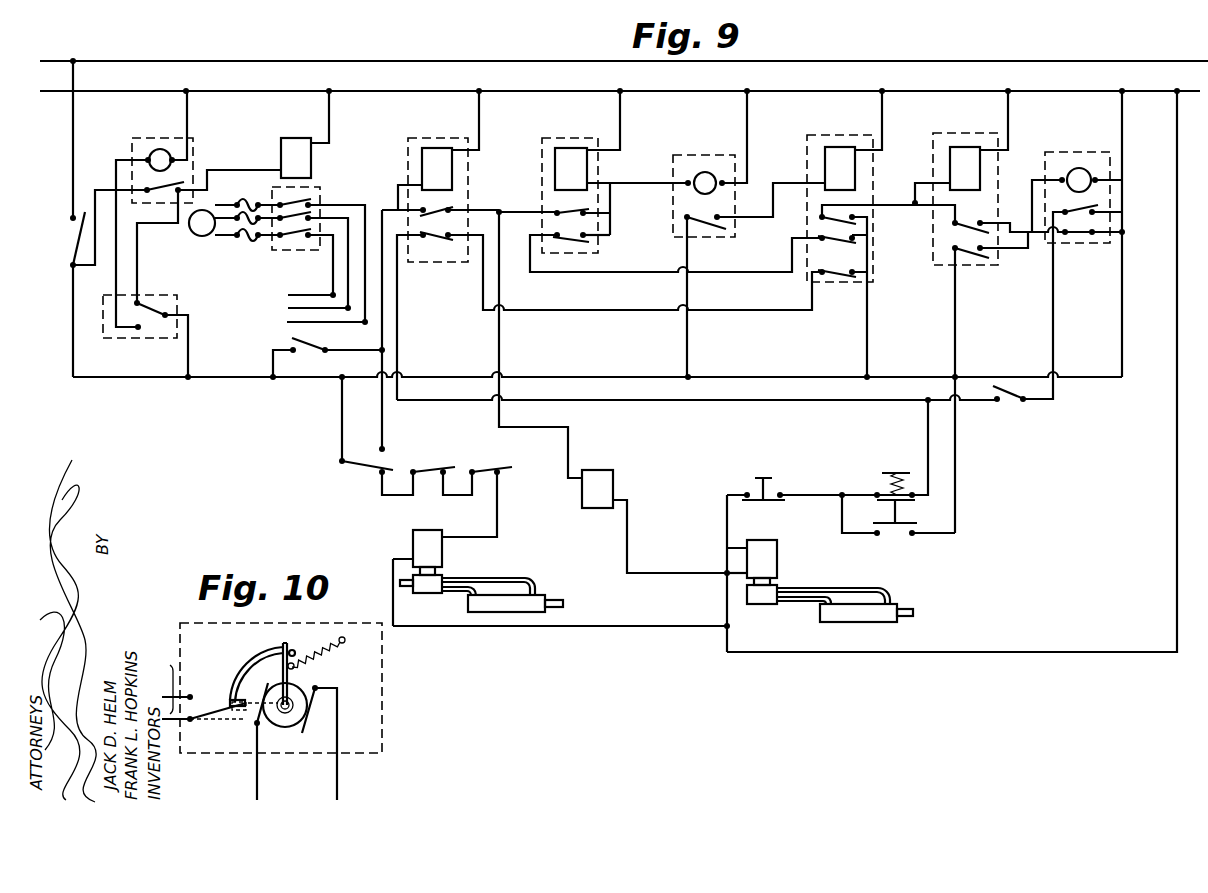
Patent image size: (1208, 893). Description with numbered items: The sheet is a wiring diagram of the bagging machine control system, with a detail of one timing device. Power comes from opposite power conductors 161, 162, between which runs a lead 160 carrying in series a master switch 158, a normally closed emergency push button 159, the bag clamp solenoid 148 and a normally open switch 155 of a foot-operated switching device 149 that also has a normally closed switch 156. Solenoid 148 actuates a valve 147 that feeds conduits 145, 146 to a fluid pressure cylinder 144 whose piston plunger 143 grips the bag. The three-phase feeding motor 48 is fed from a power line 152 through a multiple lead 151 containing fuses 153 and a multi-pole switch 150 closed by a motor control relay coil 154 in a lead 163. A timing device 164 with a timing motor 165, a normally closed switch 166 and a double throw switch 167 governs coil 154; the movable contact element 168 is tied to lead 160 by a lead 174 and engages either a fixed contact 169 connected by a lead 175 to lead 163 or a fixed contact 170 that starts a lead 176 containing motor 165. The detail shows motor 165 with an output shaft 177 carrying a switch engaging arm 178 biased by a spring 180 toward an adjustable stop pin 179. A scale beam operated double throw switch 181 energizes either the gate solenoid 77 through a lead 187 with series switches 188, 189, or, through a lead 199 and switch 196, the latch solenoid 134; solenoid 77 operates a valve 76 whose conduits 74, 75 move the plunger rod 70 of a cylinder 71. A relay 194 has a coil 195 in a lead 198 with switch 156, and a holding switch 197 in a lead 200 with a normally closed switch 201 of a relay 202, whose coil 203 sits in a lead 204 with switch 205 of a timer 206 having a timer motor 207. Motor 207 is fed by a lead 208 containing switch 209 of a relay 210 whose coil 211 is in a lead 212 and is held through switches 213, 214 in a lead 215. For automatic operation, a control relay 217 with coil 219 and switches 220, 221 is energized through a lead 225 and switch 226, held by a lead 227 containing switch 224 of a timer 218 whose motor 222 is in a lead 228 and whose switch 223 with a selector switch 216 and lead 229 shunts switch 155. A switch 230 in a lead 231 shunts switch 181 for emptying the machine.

In FIG. 9, the power conductor 161 is at (536, 58).
In FIG. 9, the power conductor 162 is at (596, 90).
In FIG. 9, the lead 160 is at (73, 159).
In FIG. 9, the master switch 158 is at (86, 236).
In FIG. 9, the lead 163 is at (95, 190).
In FIG. 10, the lead 163 is at (167, 683).
In FIG. 9, the lead 176 is at (188, 110).
In FIG. 10, the lead 176 is at (257, 785).
In FIG. 9, the timing device 164 is at (131, 137).
In FIG. 10, the timing device 164 is at (385, 703).
In FIG. 9, the timing motor 165 is at (160, 150).
In FIG. 10, the timing motor 165 is at (292, 728).
In FIG. 9, the normally closed switch 166 is at (168, 200).
In FIG. 10, the normally closed switch 166 is at (236, 694).
In FIG. 9, the motor control relay coil 154 is at (303, 140).
In FIG. 9, the lead 175 is at (139, 250).
In FIG. 9, the fixed contact 169 is at (143, 299).
In FIG. 9, the movable contact element 168 is at (160, 312).
In FIG. 9, the double throw switch 167 is at (109, 335).
In FIG. 9, the fixed contact 170 is at (142, 332).
In FIG. 9, the lead 174 is at (190, 333).
In FIG. 9, the feeding motor 48 is at (203, 236).
In FIG. 9, the fuses 153 is at (251, 244).
In FIG. 9, the multi-pole switch 150 is at (271, 262).
In FIG. 9, the multiple lead 151 is at (224, 201).
In FIG. 9, the three-phase power line 152 is at (282, 307).
In FIG. 9, the lead 231 is at (273, 360).
In FIG. 9, the switch 230 is at (290, 338).
In FIG. 9, the lead 199 is at (380, 333).
In FIG. 9, the lead 198 is at (398, 336).
In FIG. 9, the relay coil 195 is at (398, 152).
In FIG. 9, the relay 194 is at (440, 134).
In FIG. 9, the normally open switch 196 is at (440, 205).
In FIG. 9, the lead 200 is at (416, 268).
In FIG. 9, the holding switch 197 is at (439, 258).
In FIG. 9, the relay 210 is at (582, 134).
In FIG. 9, the relay coil 211 is at (560, 152).
In FIG. 9, the lead 212 is at (622, 107).
In FIG. 9, the lead 208 is at (537, 212).
In FIG. 9, the normally closed relay switch 209 is at (555, 223).
In FIG. 9, the normally open switch 213 is at (590, 240).
In FIG. 9, the lead 215 is at (611, 226).
In FIG. 9, the timer 206 is at (684, 151).
In FIG. 9, the timer motor 207 is at (709, 168).
In FIG. 9, the normally open switch 205 is at (710, 244).
In FIG. 9, the lead 204 is at (690, 330).
In FIG. 9, the relay 202 is at (836, 134).
In FIG. 9, the relay coil 203 is at (820, 152).
In FIG. 9, the normally open switch 226 is at (818, 218).
In FIG. 9, the switch 214 is at (836, 243).
In FIG. 9, the normally closed switch 201 is at (834, 273).
In FIG. 9, the control relay 217 is at (972, 131).
In FIG. 9, the relay coil 219 is at (948, 152).
In FIG. 9, the lead 225 is at (933, 184).
In FIG. 9, the normally open switch 220 is at (969, 220).
In FIG. 9, the normally open switch 221 is at (970, 258).
In FIG. 9, the lead 227 is at (935, 214).
In FIG. 9, the timer 218 is at (1100, 143).
In FIG. 9, the timer motor 222 is at (1080, 168).
In FIG. 9, the lead 228 is at (1123, 118).
In FIG. 9, the normally open switch 223 is at (1090, 208).
In FIG. 9, the normally closed switch 224 is at (1077, 238).
In FIG. 9, the lead 229 is at (1123, 222).
In FIG. 9, the selector switch 216 is at (1014, 404).
In FIG. 9, the emergency push button 159 is at (770, 485).
In FIG. 9, the manually operated switching device 149 is at (880, 462).
In FIG. 9, the switch 156 is at (895, 504).
In FIG. 9, the switch 155 is at (902, 535).
In FIG. 9, the solenoid 148 is at (780, 556).
In FIG. 9, the valve 147 is at (764, 604).
In FIG. 9, the conduit 146 is at (845, 588).
In FIG. 9, the conduit 145 is at (815, 606).
In FIG. 9, the fluid pressure cylinder 144 is at (860, 622).
In FIG. 9, the piston plunger 143 is at (910, 606).
In FIG. 9, the lead 187 is at (342, 420).
In FIG. 9, the double throw switch 181 is at (390, 446).
In FIG. 9, the two-position switch 188 is at (432, 466).
In FIG. 9, the two-position switch 189 is at (484, 466).
In FIG. 9, the solenoid 77 is at (443, 550).
In FIG. 9, the valve 76 is at (425, 590).
In FIG. 9, the conduit 75 is at (508, 582).
In FIG. 9, the conduit 74 is at (460, 592).
In FIG. 9, the fluid pressure cylinder 71 is at (538, 592).
In FIG. 9, the plunger rod 70 is at (556, 600).
In FIG. 9, the solenoid 134 is at (608, 478).
In FIG. 10, the switch engaging arm 178 is at (278, 648).
In FIG. 10, the adjustable stop pin 179 is at (294, 648).
In FIG. 10, the spring 180 is at (322, 656).
In FIG. 10, the output shaft 177 is at (270, 728).